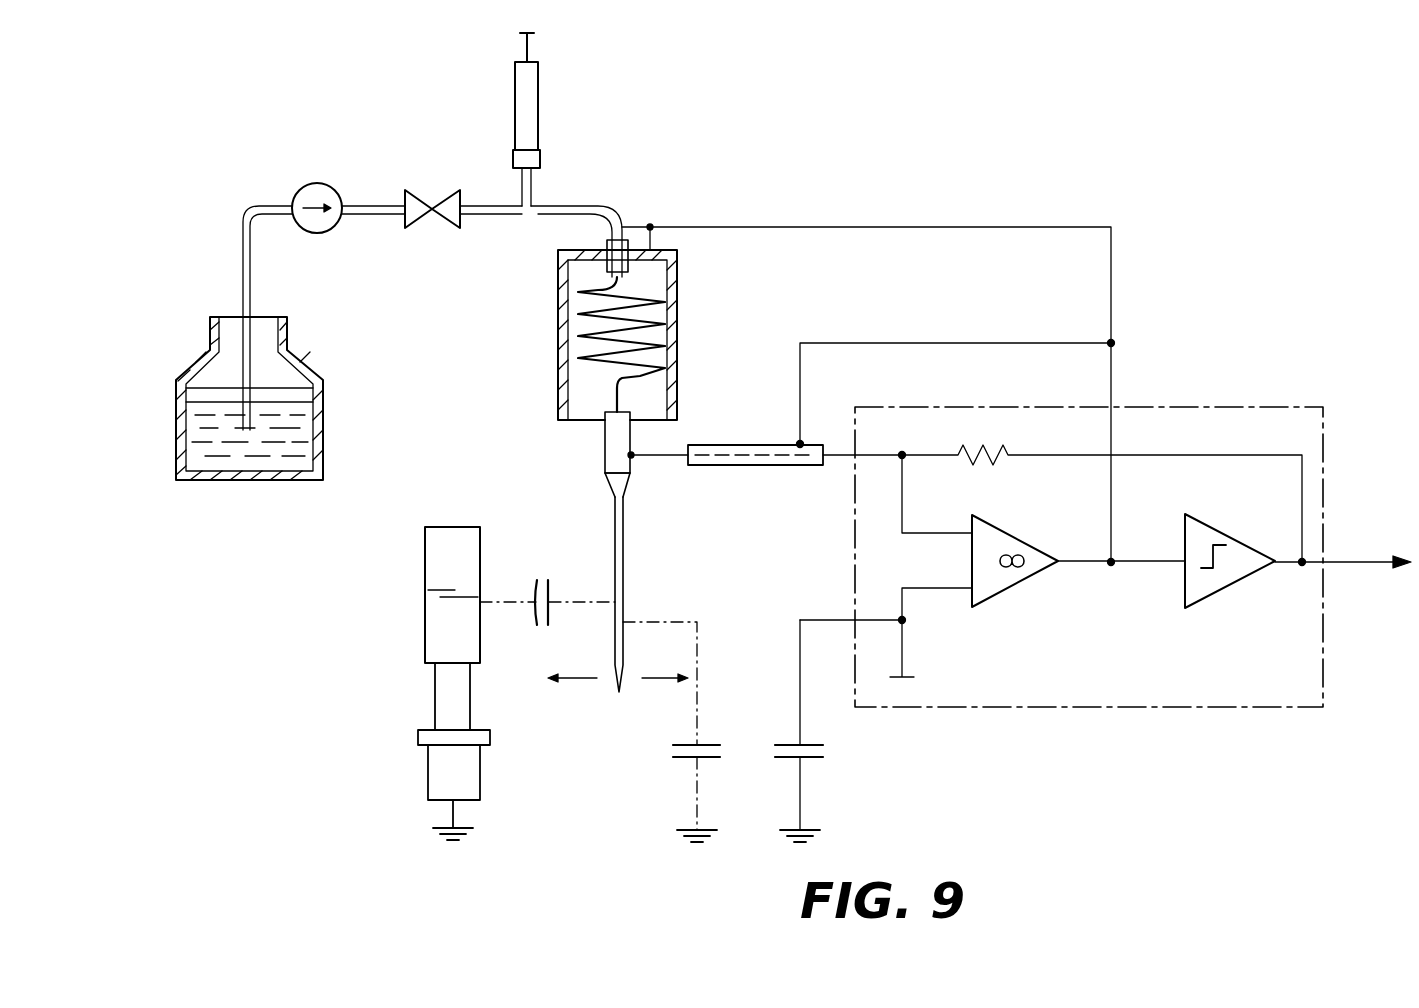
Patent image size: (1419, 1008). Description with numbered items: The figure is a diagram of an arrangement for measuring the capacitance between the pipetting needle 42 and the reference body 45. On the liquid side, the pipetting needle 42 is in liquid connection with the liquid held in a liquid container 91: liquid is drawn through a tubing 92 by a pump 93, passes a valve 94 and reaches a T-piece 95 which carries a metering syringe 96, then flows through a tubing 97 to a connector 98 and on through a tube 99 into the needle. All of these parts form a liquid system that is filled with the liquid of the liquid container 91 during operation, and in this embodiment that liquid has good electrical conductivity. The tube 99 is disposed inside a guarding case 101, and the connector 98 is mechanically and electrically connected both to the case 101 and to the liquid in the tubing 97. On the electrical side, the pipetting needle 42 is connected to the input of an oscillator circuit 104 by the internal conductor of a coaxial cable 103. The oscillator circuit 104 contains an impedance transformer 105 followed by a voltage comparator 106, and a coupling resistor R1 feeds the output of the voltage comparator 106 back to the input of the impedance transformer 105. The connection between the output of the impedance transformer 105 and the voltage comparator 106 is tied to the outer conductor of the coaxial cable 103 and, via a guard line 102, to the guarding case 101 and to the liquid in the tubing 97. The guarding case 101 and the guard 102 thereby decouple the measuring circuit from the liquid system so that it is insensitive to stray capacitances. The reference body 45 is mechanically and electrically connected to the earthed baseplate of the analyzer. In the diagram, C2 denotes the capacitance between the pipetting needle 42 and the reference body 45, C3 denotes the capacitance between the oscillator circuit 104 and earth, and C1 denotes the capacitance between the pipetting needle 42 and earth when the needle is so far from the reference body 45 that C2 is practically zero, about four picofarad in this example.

The liquid container 91 is at (190, 362).
The tubing 92 is at (240, 246).
The pump 93 is at (315, 190).
The valve 94 is at (405, 195).
The T-piece 95 is at (521, 220).
The metering syringe 96 is at (533, 95).
The tubing 97 is at (575, 205).
The connector 98 is at (607, 250).
The tube 99 is at (645, 292).
The guarding case 101 is at (678, 338).
The line (guard) 102 is at (880, 225).
The coaxial cable 103 is at (710, 470).
The oscillator circuit 104 is at (1228, 407).
The impedance transformer 105 is at (1000, 595).
The voltage comparator 106 is at (1205, 592).
The pipetting needle 42 is at (628, 585).
The reference body 45 is at (435, 575).
The capacitance between pipetting needle and earth C1 is at (683, 760).
The capacitance between pipetting needle and reference body C2 is at (537, 578).
The capacitance between oscillator circuit and earth C3 is at (812, 760).
The coupling resistor R1 is at (970, 448).